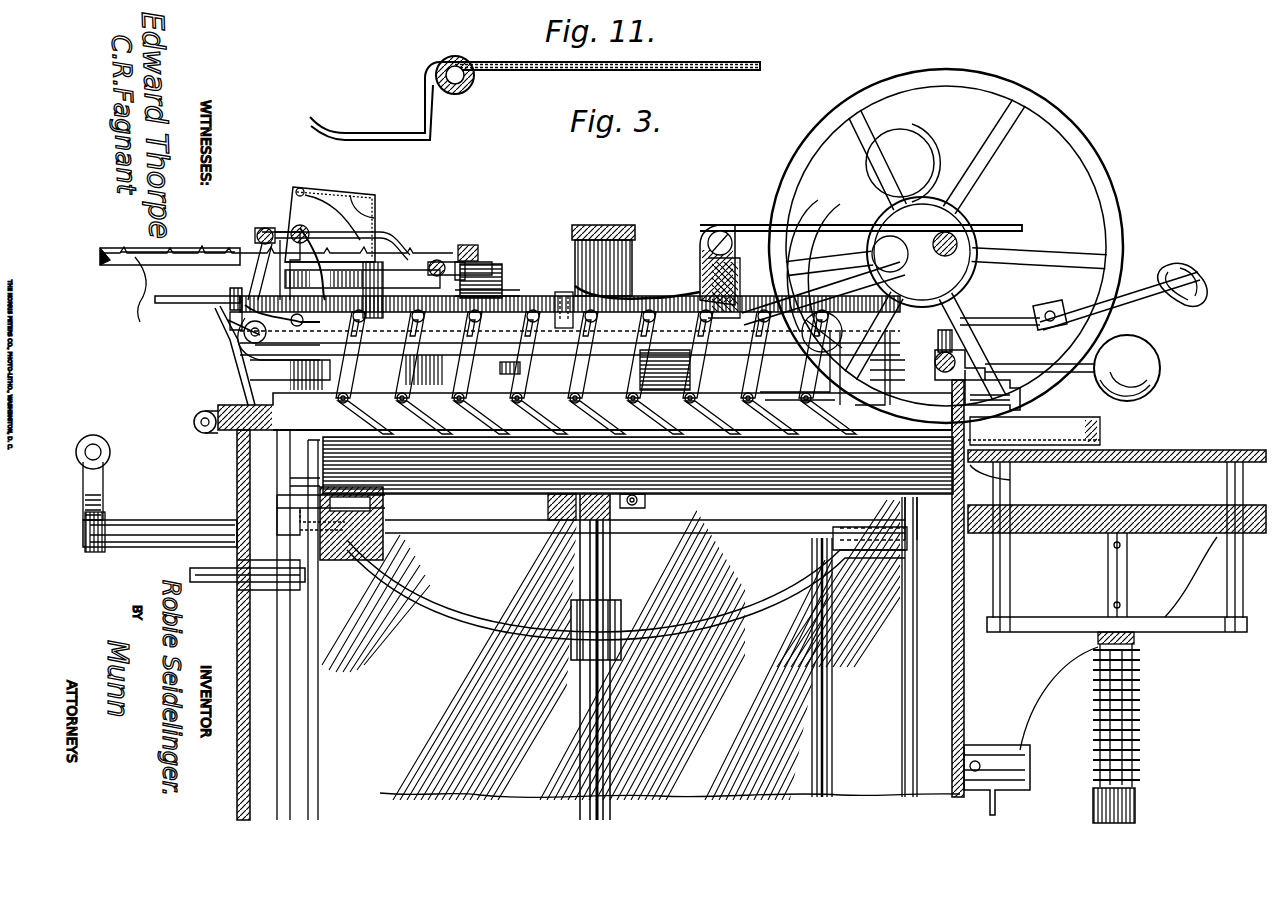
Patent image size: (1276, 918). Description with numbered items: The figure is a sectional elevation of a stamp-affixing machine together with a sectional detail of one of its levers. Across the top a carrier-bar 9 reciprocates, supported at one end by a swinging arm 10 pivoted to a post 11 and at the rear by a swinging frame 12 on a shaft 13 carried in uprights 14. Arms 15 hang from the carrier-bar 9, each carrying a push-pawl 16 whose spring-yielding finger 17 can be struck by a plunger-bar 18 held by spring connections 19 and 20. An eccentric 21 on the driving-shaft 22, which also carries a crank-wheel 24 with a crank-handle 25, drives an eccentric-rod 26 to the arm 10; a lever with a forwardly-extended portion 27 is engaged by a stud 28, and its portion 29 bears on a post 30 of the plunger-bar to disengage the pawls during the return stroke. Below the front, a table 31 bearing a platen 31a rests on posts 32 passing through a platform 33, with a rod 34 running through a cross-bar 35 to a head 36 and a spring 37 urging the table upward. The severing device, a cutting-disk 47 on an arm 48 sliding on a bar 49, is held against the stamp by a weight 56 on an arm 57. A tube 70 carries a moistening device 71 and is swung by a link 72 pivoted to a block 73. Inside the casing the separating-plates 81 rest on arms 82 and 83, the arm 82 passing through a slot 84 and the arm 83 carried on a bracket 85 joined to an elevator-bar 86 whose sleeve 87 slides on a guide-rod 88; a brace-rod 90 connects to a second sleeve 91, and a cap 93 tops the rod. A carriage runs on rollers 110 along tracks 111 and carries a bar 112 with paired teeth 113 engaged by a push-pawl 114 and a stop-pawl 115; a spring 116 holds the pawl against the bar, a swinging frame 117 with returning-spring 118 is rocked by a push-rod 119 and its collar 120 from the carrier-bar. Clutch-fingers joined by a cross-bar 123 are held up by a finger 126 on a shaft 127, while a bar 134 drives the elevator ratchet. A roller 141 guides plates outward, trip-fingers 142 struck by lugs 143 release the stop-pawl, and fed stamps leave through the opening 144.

In FIG. 3, the carrier-bar 9 is at (530, 348).
In FIG. 3, the swinging arm 10 is at (698, 268).
In FIG. 3, the post 11 is at (735, 288).
In FIG. 3, the swinging bar or frame 12 is at (244, 335).
In FIG. 3, the shaft 13 is at (298, 228).
In FIG. 3, the uprights 14 is at (290, 232).
In FIG. 3, the arms 15 is at (838, 404).
In FIG. 3, the push-pawl 16 is at (868, 408).
In FIG. 3, the spring-yielding finger 17 is at (582, 356).
In FIG. 3, the plunger-bar 18 is at (585, 411).
In FIG. 3, the spring connection 19 is at (844, 338).
In FIG. 3, the spring connection 20 is at (225, 322).
In FIG. 3, the eccentric 21 is at (922, 252).
In FIG. 3, the driving-shaft 22 is at (952, 250).
In FIG. 3, the crank-wheel 24 is at (1105, 176).
In FIG. 3, the crank-handle 25 is at (935, 160).
In FIG. 3, the eccentric-rod 26 is at (830, 288).
In FIG. 11, the lever forwardly-extended portion 27 is at (703, 70).
In FIG. 3, the lever forwardly-extended portion 27 is at (760, 224).
In FIG. 3, the stud 28 is at (880, 246).
In FIG. 11, the lever portion 29 is at (390, 132).
In FIG. 3, the lever portion 29 is at (640, 296).
In FIG. 3, the post 30 is at (563, 292).
In FIG. 3, the table 31 is at (1196, 452).
In FIG. 3, the platen 31a is at (1060, 448).
In FIG. 3, the posts 32 is at (1232, 488).
In FIG. 3, the platform 33 is at (1122, 494).
In FIG. 3, the rod 34 is at (1128, 596).
In FIG. 3, the cross-bar 35 is at (1152, 628).
In FIG. 3, the head 36 is at (1137, 800).
In FIG. 3, the spring 37 is at (1135, 750).
In FIG. 3, the cutting-disk 47 is at (1035, 431).
In FIG. 3, the arm 48 is at (1015, 395).
In FIG. 3, the bar 49 is at (945, 372).
In FIG. 3, the weight 56 is at (1157, 378).
In FIG. 3, the arm 57 is at (1086, 380).
In FIG. 3, the tube 70 is at (1128, 290).
In FIG. 3, the moistening device 71 is at (1192, 284).
In FIG. 3, the link 72 is at (1020, 318).
In FIG. 3, the block 73 is at (1062, 312).
In FIG. 3, the separating-plate 81 is at (790, 488).
In FIG. 3, the arm 82 is at (908, 543).
In FIG. 3, the arm 83 is at (385, 494).
In FIG. 3, the slot 84 is at (910, 680).
In FIG. 3, the bracket 85 is at (388, 535).
In FIG. 3, the elevator-bar 86 is at (658, 534).
In FIG. 3, the sleeve 87 is at (647, 510).
In FIG. 3, the guide-rod 88 is at (580, 708).
In FIG. 3, the brace-rod 90 is at (718, 620).
In FIG. 3, the sleeve 91 is at (571, 650).
In FIG. 3, the cap 93 is at (632, 250).
In FIG. 3, the rollers 110 is at (597, 417).
In FIG. 3, the tracks 111 is at (275, 404).
In FIG. 3, the bar 112 is at (198, 253).
In FIG. 3, the teeth 113 is at (136, 294).
In FIG. 3, the push-pawl 114 is at (405, 248).
In FIG. 3, the stop-pawl 115 is at (376, 212).
In FIG. 3, the spring 116 is at (352, 197).
In FIG. 3, the swinging frame 117 is at (255, 236).
In FIG. 3, the returning-spring 118 is at (245, 372).
In FIG. 3, the push-rod 119 is at (165, 308).
In FIG. 3, the collar 120 is at (232, 290).
In FIG. 3, the cross-bar 123 is at (480, 248).
In FIG. 3, the finger 126 is at (460, 262).
In FIG. 3, the shaft 127 is at (440, 262).
In FIG. 3, the bar 134 is at (508, 300).
In FIG. 3, the roller 141 is at (112, 450).
In FIG. 3, the trip-fingers 142 is at (362, 290).
In FIG. 3, the lugs 143 is at (106, 265).
In FIG. 3, the opening 144 is at (1012, 482).